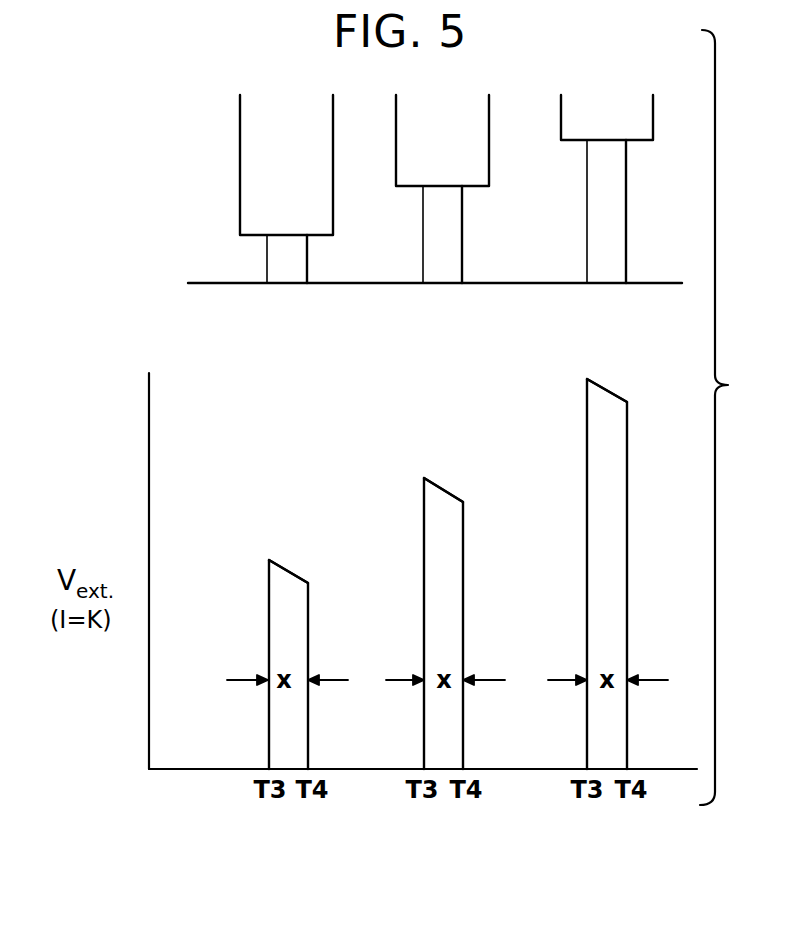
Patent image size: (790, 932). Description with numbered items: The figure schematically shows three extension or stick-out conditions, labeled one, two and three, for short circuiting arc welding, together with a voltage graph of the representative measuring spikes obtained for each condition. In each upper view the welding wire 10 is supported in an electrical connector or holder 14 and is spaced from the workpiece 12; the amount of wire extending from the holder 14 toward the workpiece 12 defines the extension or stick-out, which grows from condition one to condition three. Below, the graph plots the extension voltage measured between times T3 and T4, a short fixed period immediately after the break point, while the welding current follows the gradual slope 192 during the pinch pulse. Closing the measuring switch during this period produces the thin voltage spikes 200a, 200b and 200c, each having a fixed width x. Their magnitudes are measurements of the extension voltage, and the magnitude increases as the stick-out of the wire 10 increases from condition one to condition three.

The welding wire 10 is at (300, 265).
The workpiece 12 is at (552, 284).
The electrical connector or holder 14 is at (245, 194).
The slope 192 is at (292, 573).
The voltage spike 200a is at (309, 617).
The voltage spike 200b is at (465, 598).
The voltage spike 200c is at (630, 557).